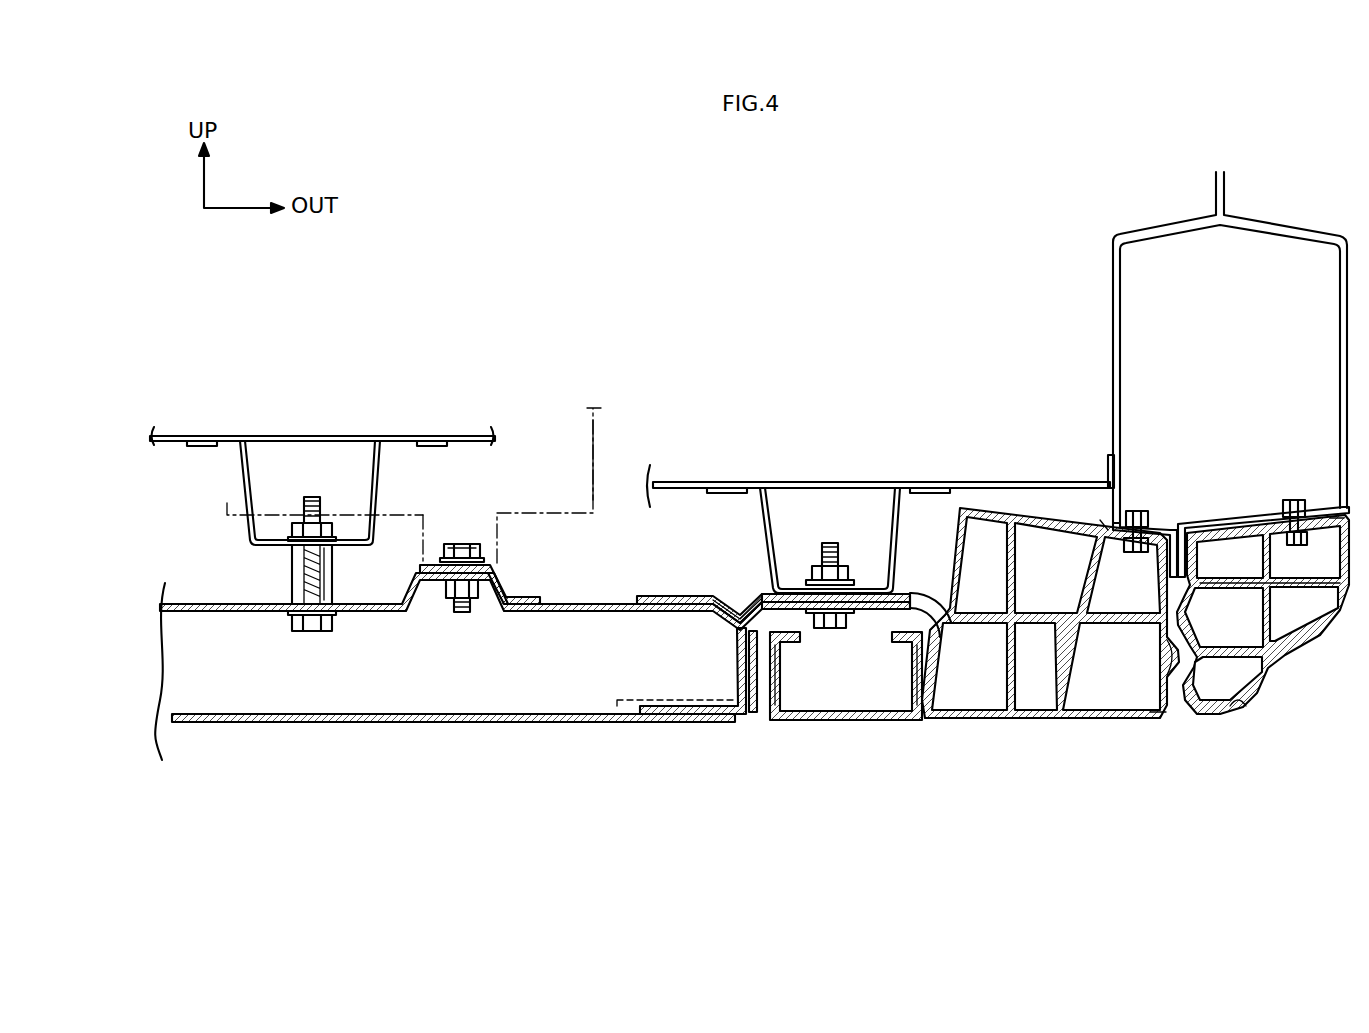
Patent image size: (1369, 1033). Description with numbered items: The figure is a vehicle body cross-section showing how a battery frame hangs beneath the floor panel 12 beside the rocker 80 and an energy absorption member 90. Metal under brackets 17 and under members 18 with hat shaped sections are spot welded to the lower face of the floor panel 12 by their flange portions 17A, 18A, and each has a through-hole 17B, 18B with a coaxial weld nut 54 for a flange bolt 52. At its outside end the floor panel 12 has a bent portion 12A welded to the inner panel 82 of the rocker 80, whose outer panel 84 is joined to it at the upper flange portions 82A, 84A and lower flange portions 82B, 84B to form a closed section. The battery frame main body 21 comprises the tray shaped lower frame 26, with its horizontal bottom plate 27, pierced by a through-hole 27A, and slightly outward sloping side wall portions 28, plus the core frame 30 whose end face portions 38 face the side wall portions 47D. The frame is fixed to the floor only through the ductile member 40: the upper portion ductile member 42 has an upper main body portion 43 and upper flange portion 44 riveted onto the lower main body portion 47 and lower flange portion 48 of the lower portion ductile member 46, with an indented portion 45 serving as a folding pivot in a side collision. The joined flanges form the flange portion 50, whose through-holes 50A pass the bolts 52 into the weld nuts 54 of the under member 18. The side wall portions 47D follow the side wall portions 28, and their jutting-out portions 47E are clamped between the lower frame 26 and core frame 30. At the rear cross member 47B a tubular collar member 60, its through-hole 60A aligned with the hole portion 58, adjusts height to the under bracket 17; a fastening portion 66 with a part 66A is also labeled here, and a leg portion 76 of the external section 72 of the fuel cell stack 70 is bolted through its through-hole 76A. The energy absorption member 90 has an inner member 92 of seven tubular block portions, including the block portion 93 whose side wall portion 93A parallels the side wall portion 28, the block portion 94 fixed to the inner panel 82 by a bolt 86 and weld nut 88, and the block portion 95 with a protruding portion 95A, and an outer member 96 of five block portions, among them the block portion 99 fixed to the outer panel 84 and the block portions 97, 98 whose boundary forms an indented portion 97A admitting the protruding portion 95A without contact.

The floor panel 12 is at (312, 437).
The bent portion 12A is at (1108, 455).
The under bracket 17 is at (232, 490).
The flange portion 17A is at (211, 449).
The through-hole 17B is at (322, 540).
The under member 18 is at (767, 500).
The flange portion 18A is at (747, 494).
The through-hole 18B is at (845, 589).
The battery frame main body 21 is at (702, 731).
The lower frame 26 is at (607, 728).
The bottom plate 27 is at (520, 722).
The through-hole 27A is at (350, 722).
The side wall portion 28 is at (755, 690).
The core frame 30 is at (703, 683).
The end face portion 38 is at (783, 642).
The ductile member 40 is at (892, 602).
The upper portion ductile member 42 is at (904, 588).
The upper main body portion 43 is at (660, 596).
The upper flange portion 44 is at (940, 637).
The indented portion 45 is at (740, 612).
The lower portion ductile member 46 is at (907, 620).
The lower main body portion 47 is at (208, 598).
The rear cross member 47B is at (600, 604).
The side wall portion 47D is at (735, 650).
The jutting-out portion 47E is at (625, 705).
The lower flange portion 48 is at (917, 612).
The flange portion 50 is at (1033, 757).
The through-hole 50A is at (912, 640).
The flange bolt 52 is at (320, 632).
The weld nut 54 is at (305, 523).
The hole portion 58 is at (305, 632).
The collar member 60 is at (292, 578).
The through-hole 60A is at (322, 586).
The fastening portion 66 is at (507, 587).
The lower nut of mounting bracket 66A is at (478, 598).
The fuel cell stack 70 is at (603, 406).
The external section 72 is at (607, 428).
The leg portion 76 is at (498, 512).
The through-hole 76A is at (455, 544).
The rocker 80 is at (1290, 216).
The inner panel 82 is at (1112, 272).
The upper flange portion 82A is at (1215, 193).
The lower flange portion 82B is at (1172, 520).
The outer panel 84 is at (1340, 318).
The upper flange portion 84A is at (1228, 197).
The lower flange portion 84B is at (1188, 528).
The bolt 86 is at (1136, 552).
The weld nut 88 is at (1139, 509).
The energy absorption member 90 is at (1135, 599).
The inner member 92 is at (1100, 724).
The block portion 93 is at (840, 718).
The side wall portion 93A is at (778, 668).
The block portion 94 is at (1103, 525).
The block portion 95 is at (1150, 712).
The protruding portion 95A is at (1180, 658).
The outer member 96 is at (1277, 680).
The block portion 97 is at (1236, 583).
The indented portion 97A is at (1200, 640).
The block portion 98 is at (1237, 700).
The block portion 99 is at (1326, 516).